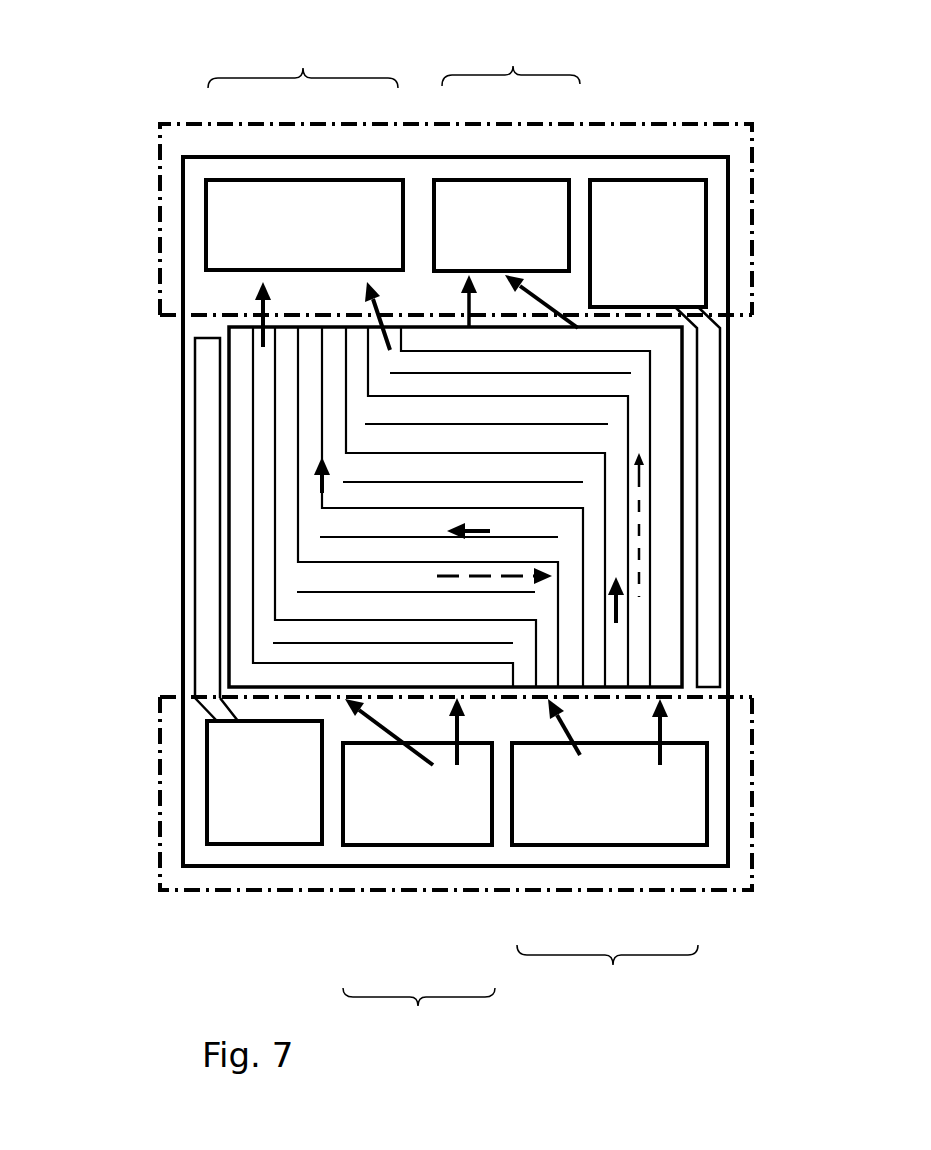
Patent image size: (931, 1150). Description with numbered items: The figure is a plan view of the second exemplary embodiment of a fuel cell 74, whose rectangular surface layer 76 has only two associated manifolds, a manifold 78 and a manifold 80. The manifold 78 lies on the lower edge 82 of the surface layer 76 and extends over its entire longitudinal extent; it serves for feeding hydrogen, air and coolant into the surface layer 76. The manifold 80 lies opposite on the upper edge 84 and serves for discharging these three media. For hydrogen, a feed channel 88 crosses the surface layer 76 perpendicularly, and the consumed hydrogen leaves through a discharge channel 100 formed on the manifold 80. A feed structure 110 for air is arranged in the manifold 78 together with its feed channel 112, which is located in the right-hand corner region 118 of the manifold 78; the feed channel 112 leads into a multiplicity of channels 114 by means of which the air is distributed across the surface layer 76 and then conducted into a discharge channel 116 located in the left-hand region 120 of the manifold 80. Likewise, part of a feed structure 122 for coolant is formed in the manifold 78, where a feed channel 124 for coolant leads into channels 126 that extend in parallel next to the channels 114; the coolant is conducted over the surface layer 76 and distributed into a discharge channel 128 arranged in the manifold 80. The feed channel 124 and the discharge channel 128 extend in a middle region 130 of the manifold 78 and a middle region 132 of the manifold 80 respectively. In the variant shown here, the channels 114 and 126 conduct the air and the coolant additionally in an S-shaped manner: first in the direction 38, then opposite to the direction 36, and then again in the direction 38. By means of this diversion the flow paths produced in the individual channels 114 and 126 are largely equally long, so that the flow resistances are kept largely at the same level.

The fuel cell 74 is at (110, 131).
The surface layer 76 is at (167, 398).
The manifold 78 is at (428, 890).
The manifold 80 is at (430, 123).
The lower edge 82 is at (677, 690).
The upper edge 84 is at (238, 327).
The feed channel 88 is at (278, 801).
The discharge channel 100 is at (672, 260).
The feed structure 110 is at (716, 729).
The feed channel 112 is at (618, 816).
The channels 114 is at (592, 663).
The discharge channel 116 is at (325, 248).
The right-hand corner region 118 is at (607, 977).
The left-hand region 120 is at (303, 60).
The feed structure 122 is at (398, 817).
The feed channel 124 is at (462, 820).
The channels 126 is at (308, 360).
The discharge channel 128 is at (518, 248).
The middle region 130 is at (419, 1016).
The middle region 132 is at (511, 58).
The direction 36 is at (488, 576).
The direction 38 is at (640, 510).